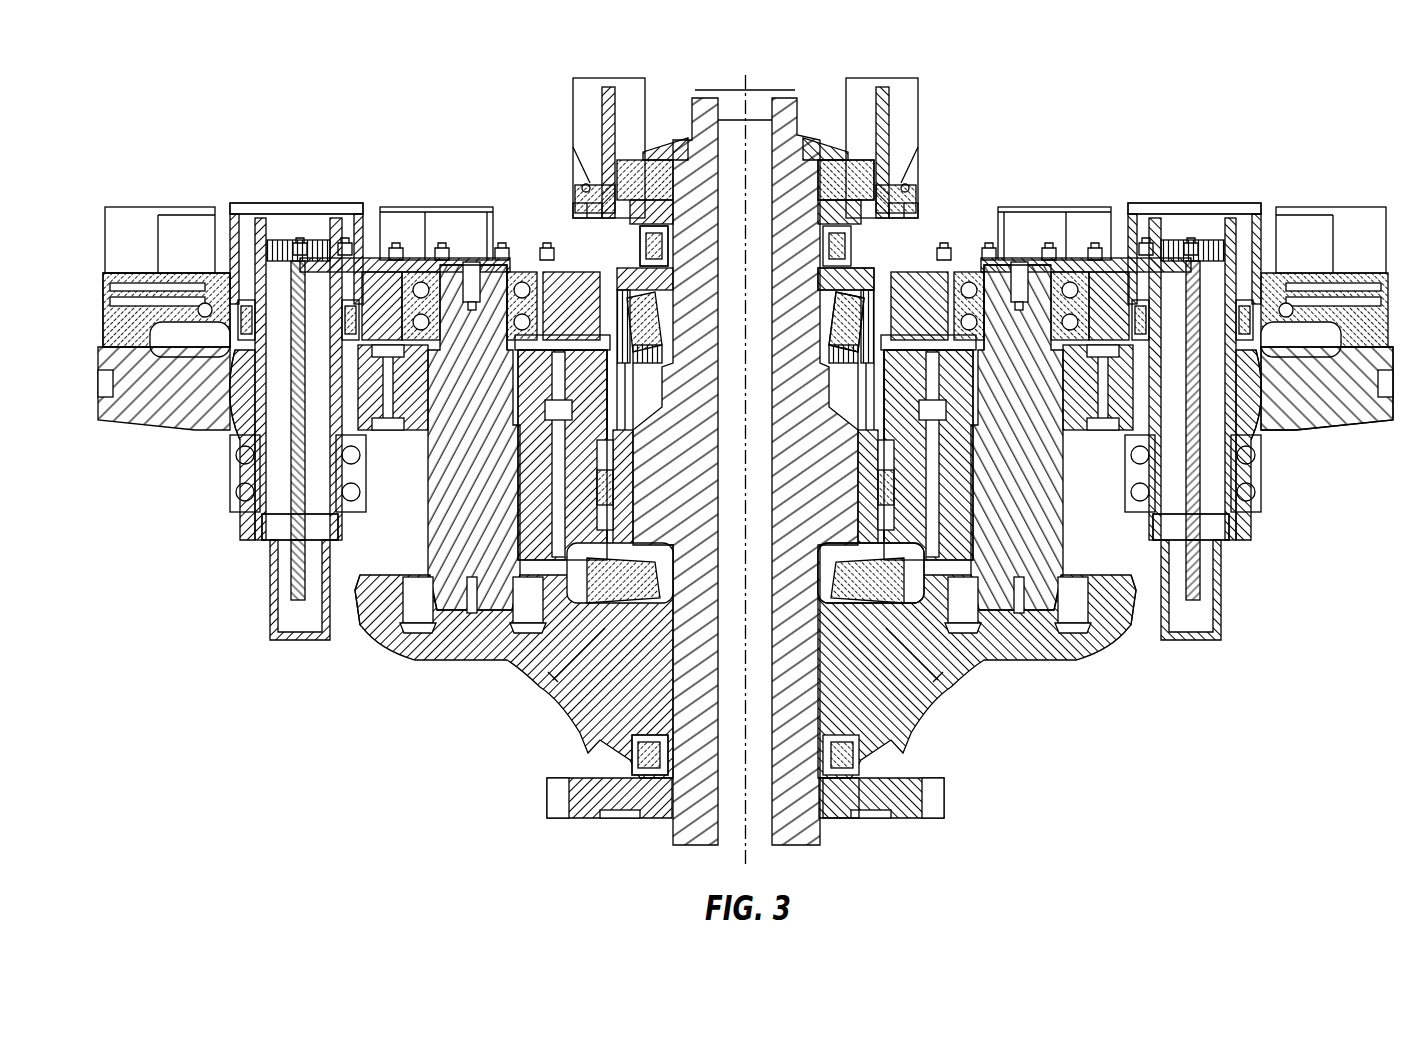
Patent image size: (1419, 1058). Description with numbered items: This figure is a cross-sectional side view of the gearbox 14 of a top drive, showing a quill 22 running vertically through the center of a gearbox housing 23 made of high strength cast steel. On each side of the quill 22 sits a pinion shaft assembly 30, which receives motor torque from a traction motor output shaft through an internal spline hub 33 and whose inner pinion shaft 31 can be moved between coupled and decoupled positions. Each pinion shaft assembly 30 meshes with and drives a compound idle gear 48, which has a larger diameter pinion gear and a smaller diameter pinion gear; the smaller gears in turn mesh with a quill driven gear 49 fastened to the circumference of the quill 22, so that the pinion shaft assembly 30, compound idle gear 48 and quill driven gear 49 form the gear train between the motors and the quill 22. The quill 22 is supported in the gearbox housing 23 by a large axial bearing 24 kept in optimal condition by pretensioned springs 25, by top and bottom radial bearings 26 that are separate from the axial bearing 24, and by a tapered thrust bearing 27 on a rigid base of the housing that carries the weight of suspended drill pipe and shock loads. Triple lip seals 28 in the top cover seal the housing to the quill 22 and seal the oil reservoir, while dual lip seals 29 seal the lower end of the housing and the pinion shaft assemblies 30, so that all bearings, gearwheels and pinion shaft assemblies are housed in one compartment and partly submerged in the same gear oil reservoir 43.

The gearbox 14 is at (1100, 774).
The quill 22 is at (795, 722).
The gearbox housing 23 is at (1355, 400).
The axial bearing 24 is at (860, 300).
The pretensioned springs 25 is at (838, 322).
The radial bearings 26 is at (640, 245).
The thrust bearing 27 is at (945, 645).
The triple lip seals 28 is at (822, 210).
The dual lip seals 29 is at (262, 522).
The pinion shaft assembly 30 is at (280, 400).
The inner pinion shaft 31 is at (245, 360).
The internal spline hub 33 is at (315, 237).
The gear oil reservoir 43 is at (393, 557).
The compound idle gear 48 is at (481, 476).
The quill driven gear 49 is at (571, 476).